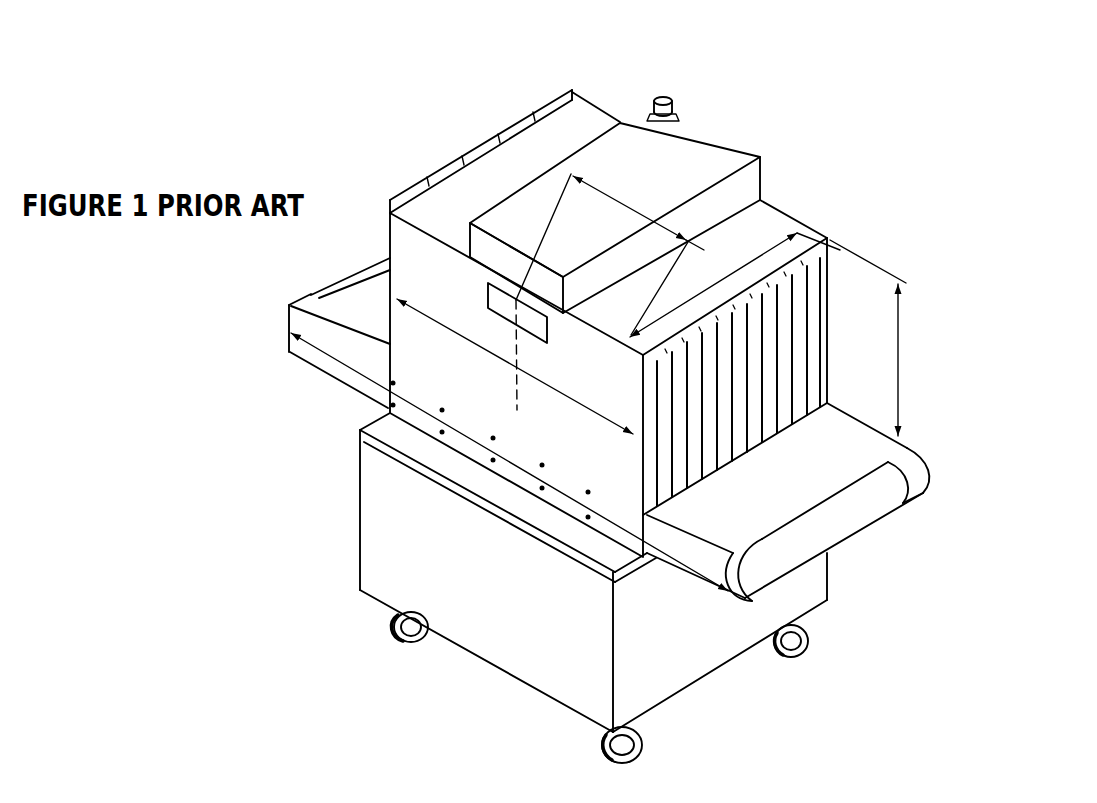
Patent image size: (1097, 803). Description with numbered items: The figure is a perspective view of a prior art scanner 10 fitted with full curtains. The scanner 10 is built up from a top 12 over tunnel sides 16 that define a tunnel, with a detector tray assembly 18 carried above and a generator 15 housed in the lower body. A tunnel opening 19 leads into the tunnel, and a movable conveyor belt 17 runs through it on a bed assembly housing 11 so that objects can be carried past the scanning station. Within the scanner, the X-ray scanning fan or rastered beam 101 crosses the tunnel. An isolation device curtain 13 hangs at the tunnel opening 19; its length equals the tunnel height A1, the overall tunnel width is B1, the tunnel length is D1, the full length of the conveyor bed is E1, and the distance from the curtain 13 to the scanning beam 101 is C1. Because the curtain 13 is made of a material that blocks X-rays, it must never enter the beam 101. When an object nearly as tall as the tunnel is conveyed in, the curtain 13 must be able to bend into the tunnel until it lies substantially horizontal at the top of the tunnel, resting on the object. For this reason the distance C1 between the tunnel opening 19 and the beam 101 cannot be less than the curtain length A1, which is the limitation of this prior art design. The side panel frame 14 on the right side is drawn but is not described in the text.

The scanner 10 is at (533, 113).
The bed assembly housing 11 is at (925, 473).
The top 12 is at (571, 125).
The isolation device curtain 13 is at (802, 313).
The side panel frame 14 is at (830, 240).
The generator 15 is at (497, 597).
The tunnel sides 16 is at (488, 386).
The conveyor belt 17 is at (832, 520).
The detector tray assembly 18 is at (697, 145).
The tunnel opening 19 is at (660, 462).
The X-ray scanning beam 101 is at (497, 423).